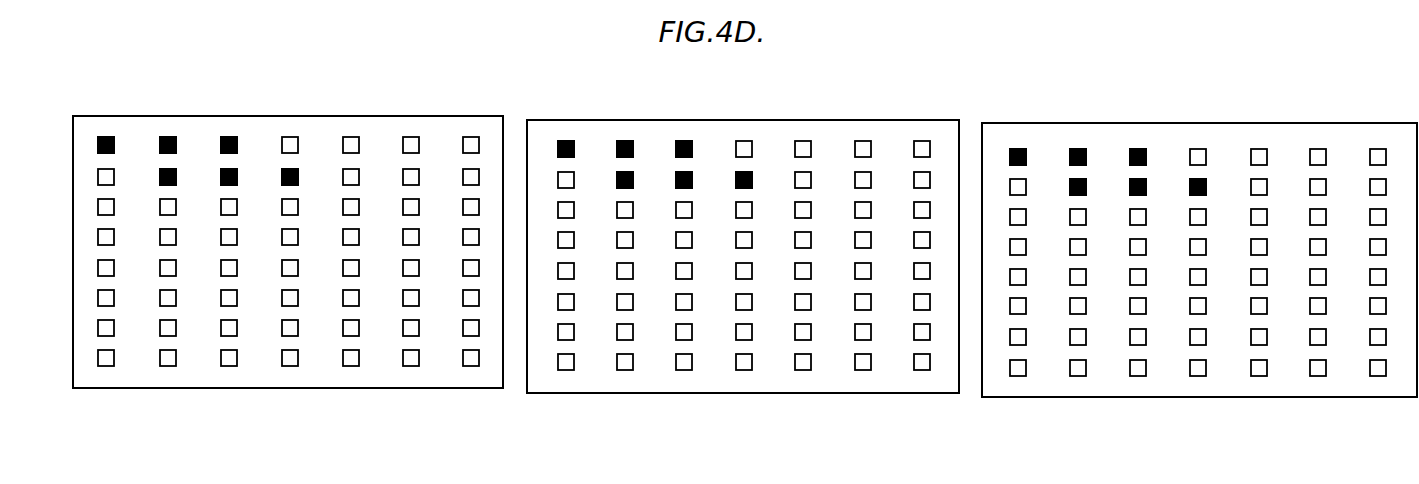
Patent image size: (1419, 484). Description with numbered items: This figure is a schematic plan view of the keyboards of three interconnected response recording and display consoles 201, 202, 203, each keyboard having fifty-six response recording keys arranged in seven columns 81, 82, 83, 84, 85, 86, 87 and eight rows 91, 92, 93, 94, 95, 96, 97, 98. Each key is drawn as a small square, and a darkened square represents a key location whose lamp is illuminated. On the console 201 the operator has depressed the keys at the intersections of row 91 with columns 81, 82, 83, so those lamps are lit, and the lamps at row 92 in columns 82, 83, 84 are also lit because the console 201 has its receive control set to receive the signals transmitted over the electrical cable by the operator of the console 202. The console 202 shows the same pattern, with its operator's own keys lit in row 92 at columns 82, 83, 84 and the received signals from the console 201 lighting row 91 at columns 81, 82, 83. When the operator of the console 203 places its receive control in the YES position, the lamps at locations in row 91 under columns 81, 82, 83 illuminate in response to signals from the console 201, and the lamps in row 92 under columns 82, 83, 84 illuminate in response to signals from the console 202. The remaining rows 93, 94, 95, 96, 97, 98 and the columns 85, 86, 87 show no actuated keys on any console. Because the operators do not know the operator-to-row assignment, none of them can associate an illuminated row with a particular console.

The first column 81 is at (107, 136).
The second column 82 is at (169, 136).
The third column 83 is at (230, 136).
The fourth column 84 is at (291, 136).
The fifth column 85 is at (352, 136).
The sixth column 86 is at (412, 136).
The seventh column 87 is at (472, 136).
The first row 91 is at (97, 145).
The second row 92 is at (97, 177).
The third row 93 is at (97, 207).
The fourth row 94 is at (97, 237).
The fifth row 95 is at (97, 268).
The sixth row 96 is at (97, 298).
The seventh row 97 is at (97, 328).
The eighth row 98 is at (97, 358).
The response recording and display console 201 is at (285, 390).
The response recording and display console 202 is at (740, 395).
The response recording and display console 203 is at (1175, 399).